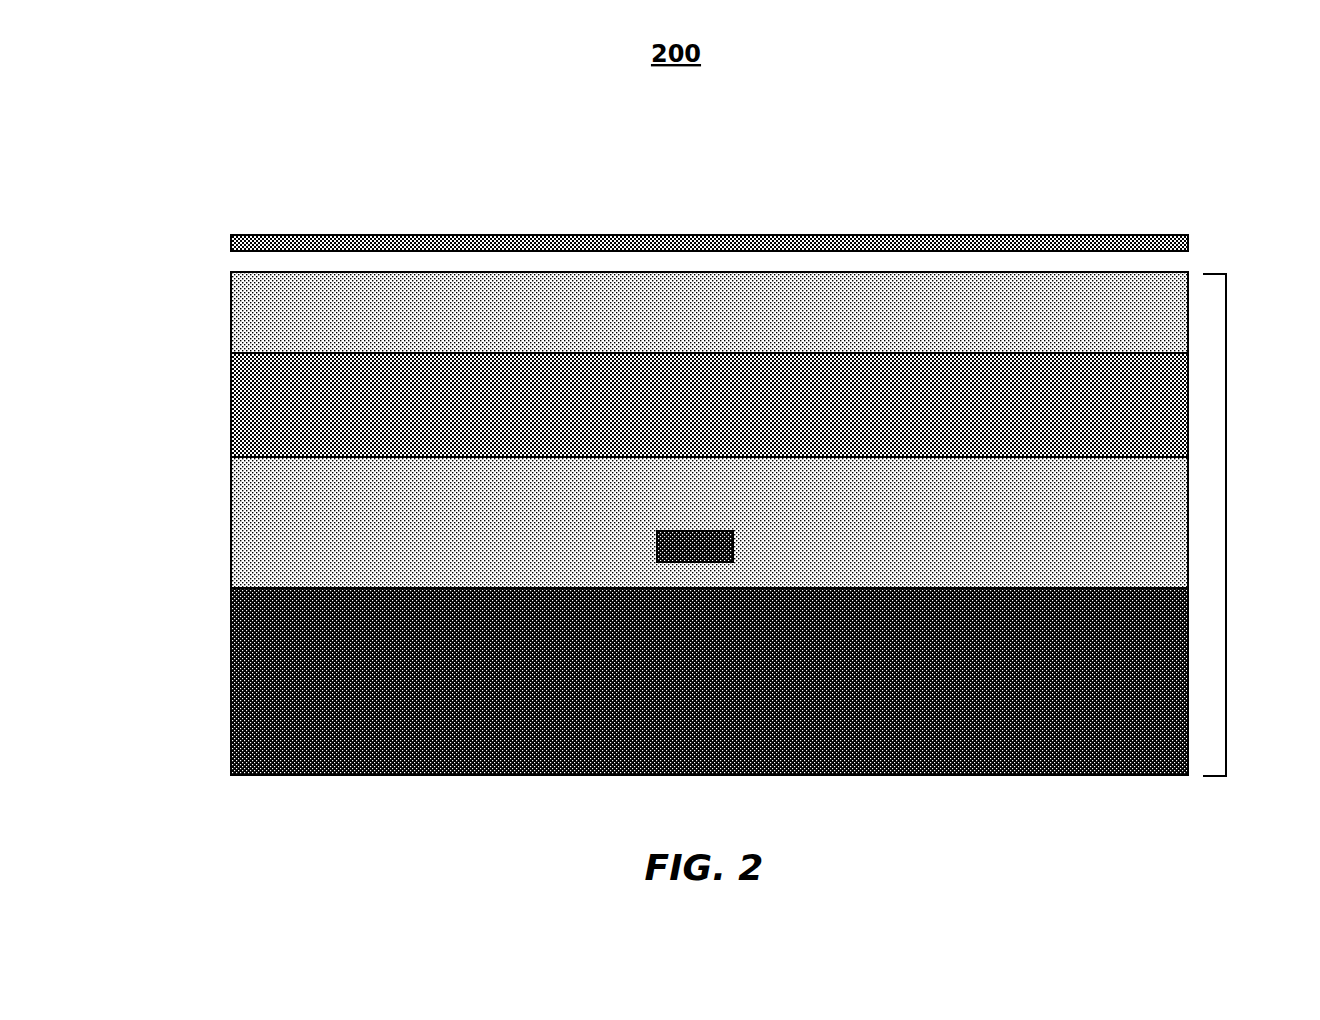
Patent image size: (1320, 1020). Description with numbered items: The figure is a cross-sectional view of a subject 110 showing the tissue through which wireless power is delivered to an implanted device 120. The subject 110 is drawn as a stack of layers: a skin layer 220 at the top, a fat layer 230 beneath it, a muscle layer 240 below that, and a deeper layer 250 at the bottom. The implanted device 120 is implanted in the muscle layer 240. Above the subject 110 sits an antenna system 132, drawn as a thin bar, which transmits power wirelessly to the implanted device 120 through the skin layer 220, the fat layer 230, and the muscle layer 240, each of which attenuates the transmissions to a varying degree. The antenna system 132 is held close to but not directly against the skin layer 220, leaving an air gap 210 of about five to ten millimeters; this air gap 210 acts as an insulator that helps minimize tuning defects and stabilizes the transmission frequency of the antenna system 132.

The subject 110 is at (1257, 507).
The implanted device 120 is at (697, 522).
The antenna system 132 is at (697, 224).
The air gap 210 is at (212, 262).
The skin layer 220 is at (212, 308).
The fat layer 230 is at (212, 403).
The muscle layer 240 is at (212, 520).
The bone layer 250 is at (212, 680).